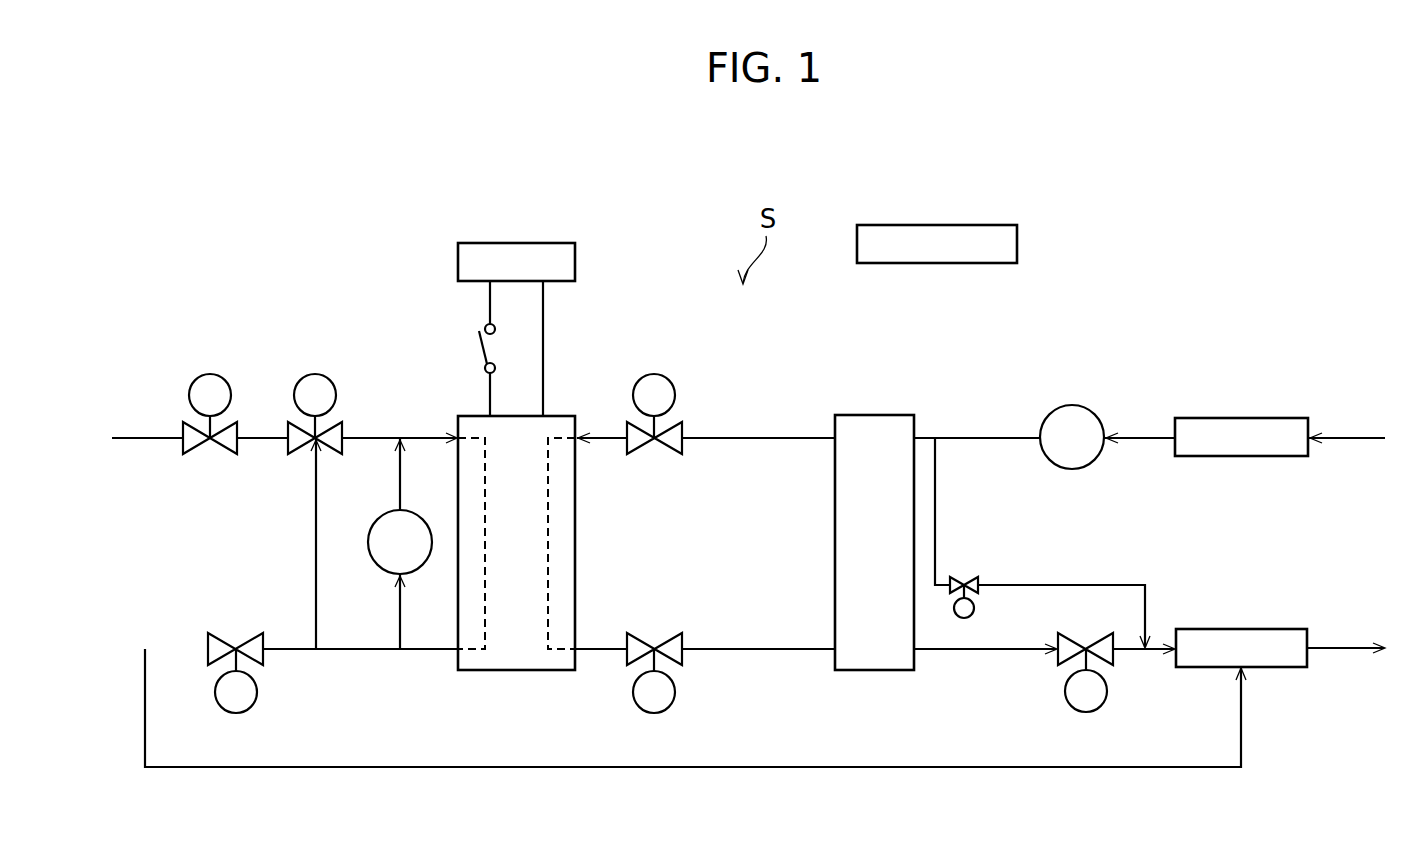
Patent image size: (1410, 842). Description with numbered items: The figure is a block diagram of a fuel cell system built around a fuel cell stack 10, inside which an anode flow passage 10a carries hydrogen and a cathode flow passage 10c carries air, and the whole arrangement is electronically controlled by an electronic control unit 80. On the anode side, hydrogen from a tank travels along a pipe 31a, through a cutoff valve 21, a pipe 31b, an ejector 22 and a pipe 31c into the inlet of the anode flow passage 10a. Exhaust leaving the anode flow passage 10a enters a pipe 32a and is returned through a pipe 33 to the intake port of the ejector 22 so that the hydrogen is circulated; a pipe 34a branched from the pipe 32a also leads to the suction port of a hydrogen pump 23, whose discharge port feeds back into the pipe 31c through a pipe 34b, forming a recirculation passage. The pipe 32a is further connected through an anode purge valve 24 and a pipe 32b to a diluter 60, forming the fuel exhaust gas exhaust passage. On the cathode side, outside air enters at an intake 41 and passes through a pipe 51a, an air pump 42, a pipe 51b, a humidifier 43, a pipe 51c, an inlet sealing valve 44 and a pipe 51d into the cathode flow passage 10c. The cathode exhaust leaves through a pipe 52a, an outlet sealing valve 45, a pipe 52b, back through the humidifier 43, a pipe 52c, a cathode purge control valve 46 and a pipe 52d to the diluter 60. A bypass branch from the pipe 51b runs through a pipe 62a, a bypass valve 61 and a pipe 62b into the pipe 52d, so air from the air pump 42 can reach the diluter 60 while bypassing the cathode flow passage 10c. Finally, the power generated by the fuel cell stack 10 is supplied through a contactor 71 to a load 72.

The fuel cell stack 10 is at (517, 671).
The anode flow passage 10a is at (472, 671).
The cathode flow passage 10c is at (563, 671).
The cutoff valve 21 is at (211, 375).
The ejector 22 is at (316, 375).
The hydrogen pump 23 is at (369, 556).
The anode purge valve 24 is at (257, 692).
The pipe 31a is at (145, 437).
The pipe 31b is at (262, 437).
The pipe 31c is at (383, 437).
The pipe 32a is at (363, 652).
The pipe 32b is at (146, 729).
The pipe 33 is at (316, 522).
The pipe 34a is at (398, 605).
The pipe 34b is at (398, 474).
The intake 41 is at (1246, 418).
The air pump 42 is at (1093, 411).
The humidifier 43 is at (874, 415).
The inlet sealing valve 44 is at (655, 375).
The outlet sealing valve 45 is at (676, 697).
The CPCV (Cathode Purge Control Valve) 46 is at (1086, 712).
The pipe 51a is at (1150, 440).
The pipe 51b is at (985, 437).
The pipe 51c is at (742, 437).
The pipe 51d is at (606, 437).
The pipe 52a is at (612, 651).
The pipe 52b is at (778, 651).
The pipe 52c is at (972, 651).
The pipe 52d is at (1128, 651).
The diluter 60 is at (1280, 629).
The bypass valve 61 is at (975, 609).
The pipe 62a is at (937, 540).
The pipe 62b is at (1095, 584).
The contactor 71 is at (479, 345).
The load 72 is at (575, 262).
The electronic control unit (ECU) 80 is at (1017, 242).